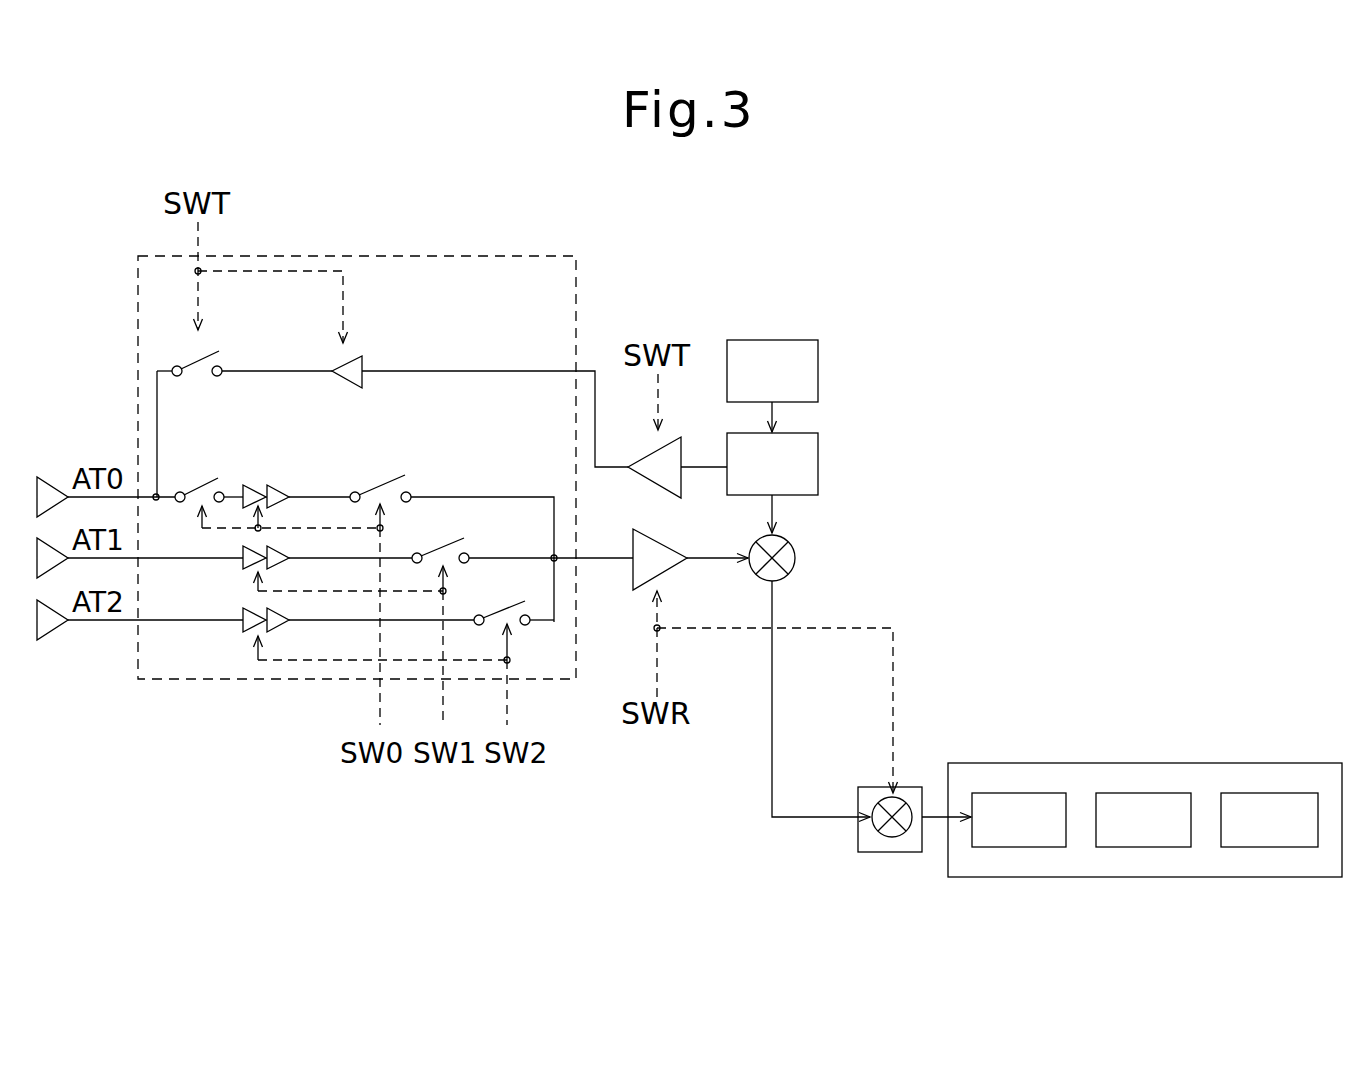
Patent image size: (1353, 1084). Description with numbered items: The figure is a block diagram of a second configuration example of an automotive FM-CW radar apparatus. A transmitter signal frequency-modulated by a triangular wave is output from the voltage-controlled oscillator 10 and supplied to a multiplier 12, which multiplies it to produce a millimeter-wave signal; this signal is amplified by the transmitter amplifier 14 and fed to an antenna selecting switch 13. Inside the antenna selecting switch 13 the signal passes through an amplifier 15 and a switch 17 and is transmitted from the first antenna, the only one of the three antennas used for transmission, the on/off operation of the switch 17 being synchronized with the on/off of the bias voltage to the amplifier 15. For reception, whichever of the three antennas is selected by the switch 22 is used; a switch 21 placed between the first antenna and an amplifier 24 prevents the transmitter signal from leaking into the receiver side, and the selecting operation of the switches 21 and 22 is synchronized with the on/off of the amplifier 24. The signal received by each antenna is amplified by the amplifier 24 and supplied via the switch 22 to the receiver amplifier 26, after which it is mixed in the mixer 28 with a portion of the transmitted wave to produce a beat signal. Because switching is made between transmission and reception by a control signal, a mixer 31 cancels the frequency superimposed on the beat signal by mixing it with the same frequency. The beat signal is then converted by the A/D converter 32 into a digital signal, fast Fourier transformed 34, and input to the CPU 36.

The voltage-controlled oscillator 10 is at (818, 372).
The multiplier 12 is at (818, 465).
The antenna selecting switch 13 is at (578, 300).
The transmitter amplifier 14 is at (681, 486).
The amplifier 15 is at (373, 352).
The switch 17 is at (233, 352).
The switch 21 is at (193, 469).
The switch 22 is at (434, 476).
The amplifier 24 is at (266, 469).
The receiver amplifier 26 is at (633, 577).
The mixer 28 is at (795, 553).
The mixer 31 is at (908, 787).
The A/D converter 32 is at (1020, 756).
The fast Fourier transform 34 is at (1150, 756).
The CPU 36 is at (1262, 793).